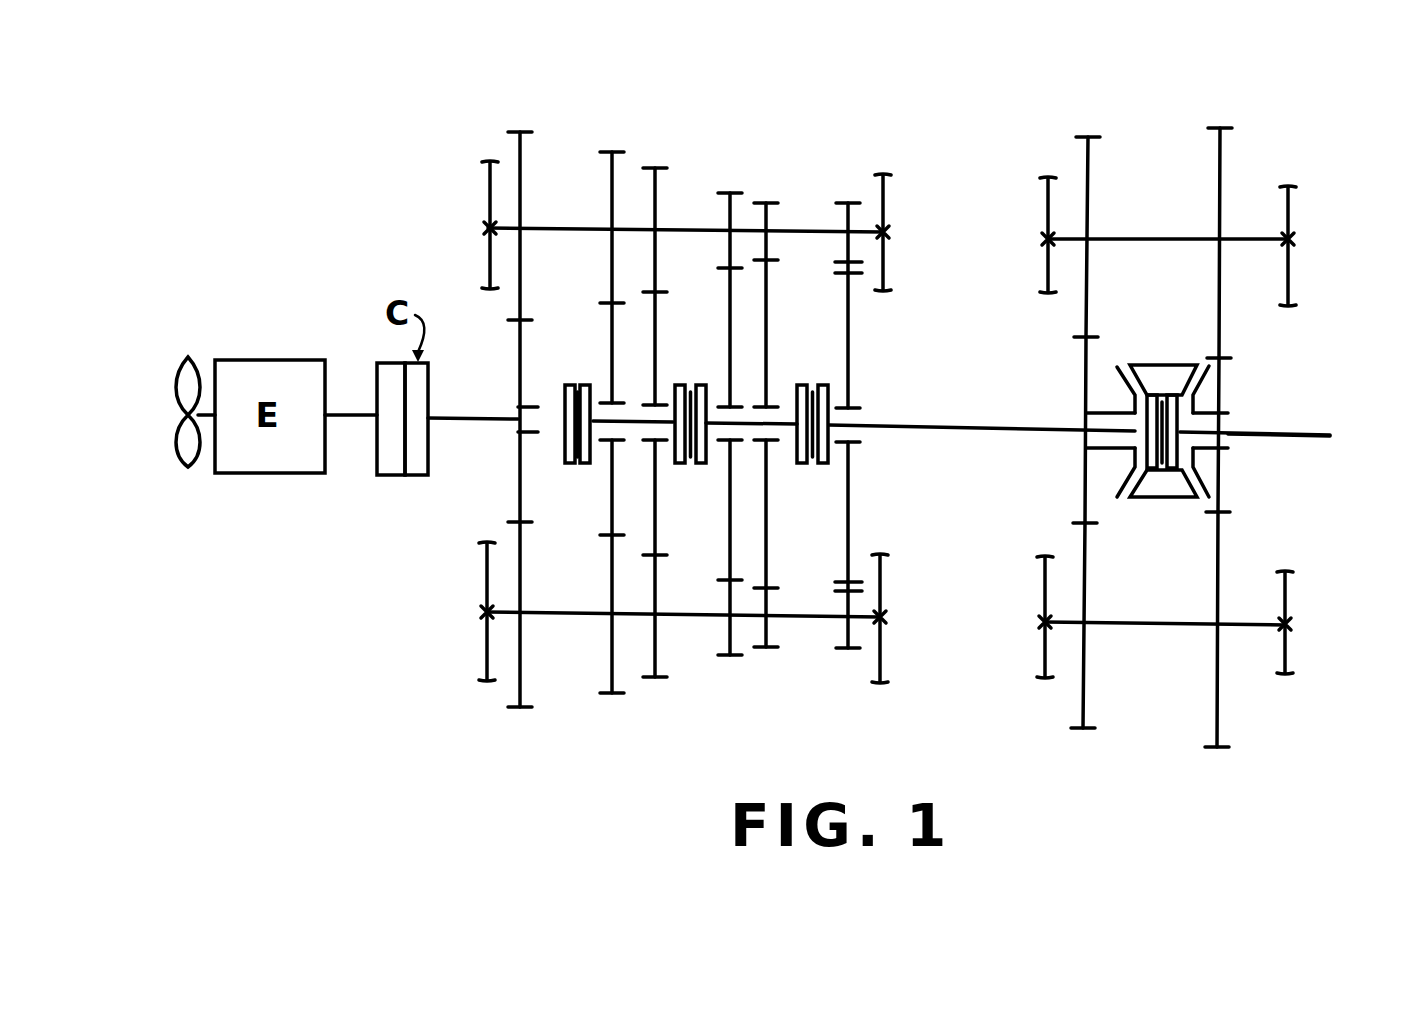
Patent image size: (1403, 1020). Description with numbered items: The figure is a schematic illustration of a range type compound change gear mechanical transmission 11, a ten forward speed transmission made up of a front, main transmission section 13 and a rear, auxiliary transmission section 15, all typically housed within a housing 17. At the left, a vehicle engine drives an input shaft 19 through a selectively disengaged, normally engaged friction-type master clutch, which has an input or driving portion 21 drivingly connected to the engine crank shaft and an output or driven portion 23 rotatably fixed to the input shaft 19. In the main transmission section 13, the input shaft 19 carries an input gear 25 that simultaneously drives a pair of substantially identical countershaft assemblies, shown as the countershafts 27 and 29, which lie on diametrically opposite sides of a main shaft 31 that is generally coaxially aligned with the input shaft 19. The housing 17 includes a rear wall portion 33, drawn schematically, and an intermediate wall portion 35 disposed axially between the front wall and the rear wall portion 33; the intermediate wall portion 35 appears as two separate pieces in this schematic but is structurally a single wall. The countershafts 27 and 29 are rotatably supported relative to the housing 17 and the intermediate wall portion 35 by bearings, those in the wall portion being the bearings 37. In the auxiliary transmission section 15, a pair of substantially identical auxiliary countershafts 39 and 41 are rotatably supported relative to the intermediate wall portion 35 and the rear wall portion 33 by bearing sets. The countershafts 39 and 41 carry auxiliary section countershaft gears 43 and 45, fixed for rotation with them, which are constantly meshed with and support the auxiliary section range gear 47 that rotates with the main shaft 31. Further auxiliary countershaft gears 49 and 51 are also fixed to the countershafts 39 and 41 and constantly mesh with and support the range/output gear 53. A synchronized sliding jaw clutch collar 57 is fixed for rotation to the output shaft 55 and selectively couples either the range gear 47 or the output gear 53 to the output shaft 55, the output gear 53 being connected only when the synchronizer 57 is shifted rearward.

The transmission 11 is at (947, 132).
The main transmission section 13 is at (693, 125).
The auxiliary transmission section 15 is at (1131, 105).
The housing 17 is at (488, 190).
The input shaft 19 is at (476, 417).
The input or driving portion 21 is at (388, 470).
The output or driven portion 23 is at (415, 472).
The input gear 25 is at (522, 368).
The countershaft 27 is at (808, 218).
The countershaft 29 is at (809, 634).
The main shaft 31 is at (950, 430).
The rear wall portion 33 is at (1290, 214).
The intermediate wall portion 35 is at (1046, 265).
The bearings 37 is at (886, 230).
The auxiliary countershaft 39 is at (1190, 256).
The auxiliary countershaft 41 is at (1172, 608).
The auxiliary section countershaft gear 43 is at (1090, 170).
The auxiliary section countershaft gear 45 is at (1086, 668).
The auxiliary section range gear 47 is at (1085, 377).
The auxiliary countershaft gear 49 is at (1222, 170).
The auxiliary countershaft gear 51 is at (1220, 690).
The range/output gear 53 is at (1222, 387).
The output shaft 55 is at (1283, 436).
The synchronized sliding jaw clutch collar 57 is at (1180, 500).